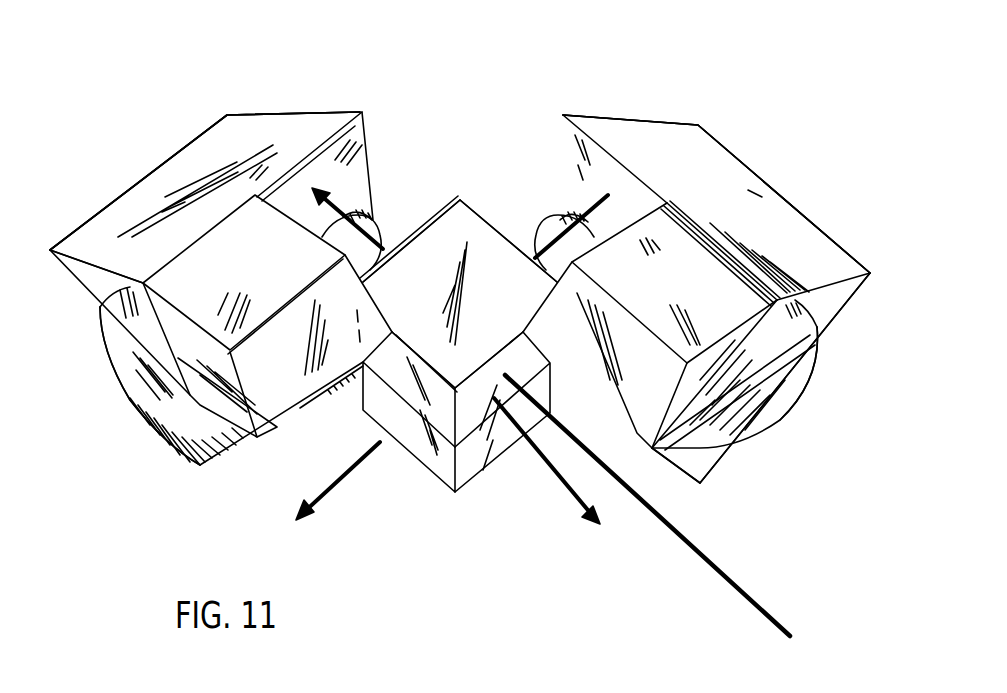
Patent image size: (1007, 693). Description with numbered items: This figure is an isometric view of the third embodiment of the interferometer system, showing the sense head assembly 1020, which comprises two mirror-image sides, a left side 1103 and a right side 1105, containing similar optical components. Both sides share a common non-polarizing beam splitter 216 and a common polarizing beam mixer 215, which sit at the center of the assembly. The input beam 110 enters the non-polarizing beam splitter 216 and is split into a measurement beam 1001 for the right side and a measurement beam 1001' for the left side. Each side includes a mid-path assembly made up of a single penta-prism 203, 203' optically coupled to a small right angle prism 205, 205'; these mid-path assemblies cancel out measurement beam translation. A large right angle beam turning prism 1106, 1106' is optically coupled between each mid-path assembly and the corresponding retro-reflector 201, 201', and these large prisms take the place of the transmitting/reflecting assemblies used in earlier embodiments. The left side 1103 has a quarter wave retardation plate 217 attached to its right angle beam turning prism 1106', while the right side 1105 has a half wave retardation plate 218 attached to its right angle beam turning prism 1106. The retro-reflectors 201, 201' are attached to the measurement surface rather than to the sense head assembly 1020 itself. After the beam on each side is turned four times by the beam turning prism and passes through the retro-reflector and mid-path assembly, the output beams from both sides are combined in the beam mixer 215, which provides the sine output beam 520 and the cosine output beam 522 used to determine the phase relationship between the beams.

The sense head assembly 1020 is at (173, 532).
The left side 1103 is at (145, 108).
The right angle beam turning prism 1106' is at (211, 249).
The penta-prism 203' is at (256, 288).
The retro-reflector 201' is at (205, 386).
The small right angle prism 205' is at (167, 438).
The measurement beam 1001' is at (387, 173).
The quarter wave retardation plate 217 is at (378, 235).
The right side 1105 is at (762, 147).
The right angle beam turning prism 1106 is at (716, 299).
The penta-prism 203 is at (650, 343).
The retro-reflector 201 is at (744, 393).
The small right angle prism 205 is at (761, 392).
The measurement beam 1001 is at (508, 196).
The half wave retardation plate 218 is at (545, 236).
The non-polarizing beam splitter 216 is at (518, 300).
The polarizing beam mixer 215 is at (388, 408).
The sine output beam 520 is at (363, 468).
The cosine output beam 522 is at (567, 503).
The input beam 110 is at (737, 590).